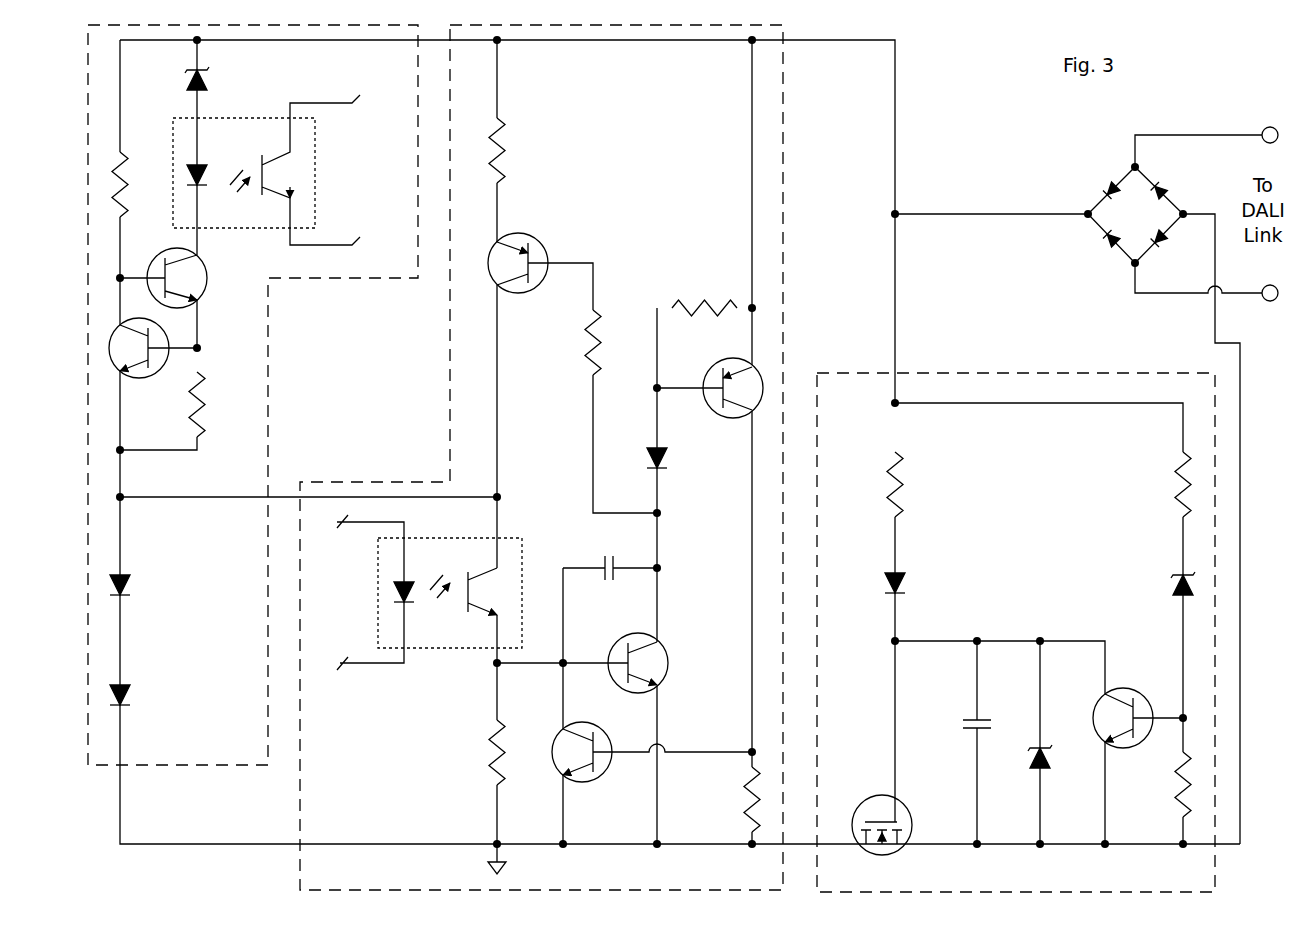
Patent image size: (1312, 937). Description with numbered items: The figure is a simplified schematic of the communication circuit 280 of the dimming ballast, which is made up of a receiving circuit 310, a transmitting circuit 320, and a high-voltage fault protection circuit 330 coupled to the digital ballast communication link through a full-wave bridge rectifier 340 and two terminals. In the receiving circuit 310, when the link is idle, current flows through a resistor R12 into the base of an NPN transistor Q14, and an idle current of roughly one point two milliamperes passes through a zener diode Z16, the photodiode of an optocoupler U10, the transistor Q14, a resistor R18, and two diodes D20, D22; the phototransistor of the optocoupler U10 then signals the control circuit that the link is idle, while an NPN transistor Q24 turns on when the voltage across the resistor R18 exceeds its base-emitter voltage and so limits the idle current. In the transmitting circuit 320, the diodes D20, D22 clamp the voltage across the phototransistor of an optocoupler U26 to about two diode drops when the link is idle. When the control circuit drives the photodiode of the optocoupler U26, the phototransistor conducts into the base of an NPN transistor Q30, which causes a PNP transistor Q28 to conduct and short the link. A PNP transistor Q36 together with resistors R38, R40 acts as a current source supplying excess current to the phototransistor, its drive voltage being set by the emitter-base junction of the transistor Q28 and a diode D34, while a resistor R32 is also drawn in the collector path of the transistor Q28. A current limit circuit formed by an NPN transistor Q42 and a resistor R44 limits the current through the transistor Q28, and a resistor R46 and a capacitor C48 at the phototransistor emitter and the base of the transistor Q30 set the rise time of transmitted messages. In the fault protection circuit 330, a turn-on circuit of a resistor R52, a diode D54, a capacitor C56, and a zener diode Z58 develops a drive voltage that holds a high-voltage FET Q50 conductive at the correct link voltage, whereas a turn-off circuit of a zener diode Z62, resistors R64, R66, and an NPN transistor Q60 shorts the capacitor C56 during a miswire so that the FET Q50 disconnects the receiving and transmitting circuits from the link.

The zener diode Z16 is at (200, 78).
The optocoupler U10 is at (278, 118).
The resistor R12 is at (122, 152).
The NPN bipolar junction transistor Q14 is at (207, 290).
The NPN bipolar junction transistor Q24 is at (128, 372).
The resistor R18 is at (200, 400).
The diode D20 is at (125, 585).
The diode D22 is at (125, 695).
The receiving circuit 310 is at (355, 278).
The optocoupler U26 is at (460, 650).
The resistor R38 is at (500, 152).
The PNP bipolar junction transistor Q36 is at (538, 235).
The resistor R32 is at (695, 305).
The resistor R40 is at (595, 340).
The PNP bipolar junction transistor Q28 is at (715, 418).
The diode D34 is at (655, 460).
The capacitor C48 is at (600, 560).
The NPN bipolar junction transistor Q30 is at (622, 642).
The NPN bipolar junction transistor Q42 is at (607, 770).
The resistor R46 is at (495, 752).
The resistor R44 is at (750, 806).
The transmitting circuit 320 is at (783, 118).
The communication circuit 280 is at (1070, 205).
The full-wave bridge rectifier 340 is at (1088, 248).
The high-voltage fault protection circuit 330 is at (925, 373).
The resistor R52 is at (898, 475).
The resistor R64 is at (1180, 484).
The diode D54 is at (900, 585).
The zener diode Z62 is at (1176, 590).
The NPN bipolar junction transistor Q60 is at (1148, 700).
The capacitor C56 is at (975, 732).
The zener diode Z58 is at (1050, 762).
The resistor R66 is at (1181, 803).
The high-voltage field-effect transistor Q50 is at (893, 850).